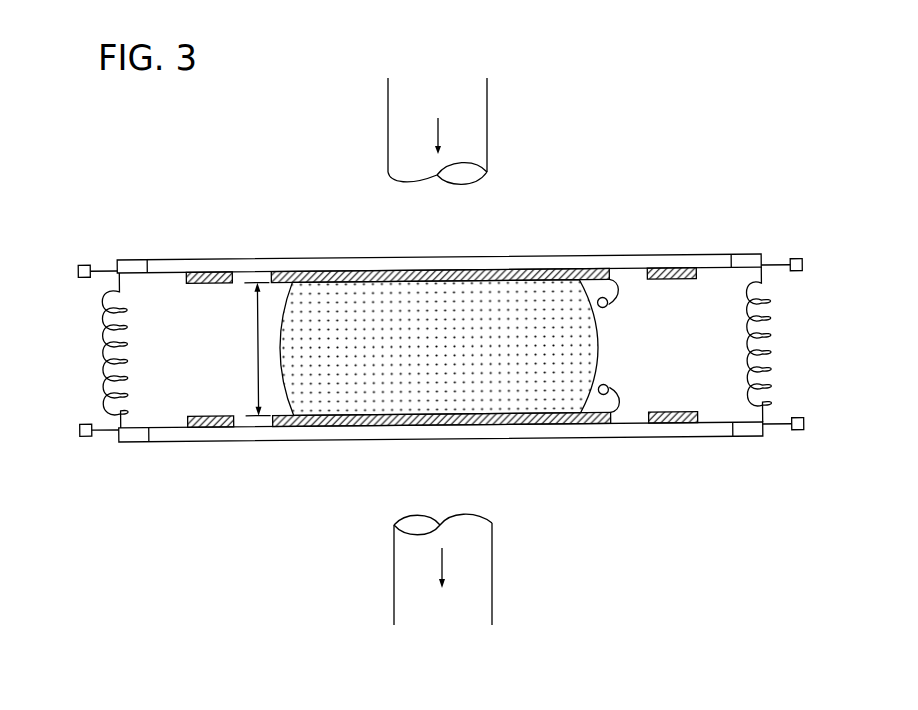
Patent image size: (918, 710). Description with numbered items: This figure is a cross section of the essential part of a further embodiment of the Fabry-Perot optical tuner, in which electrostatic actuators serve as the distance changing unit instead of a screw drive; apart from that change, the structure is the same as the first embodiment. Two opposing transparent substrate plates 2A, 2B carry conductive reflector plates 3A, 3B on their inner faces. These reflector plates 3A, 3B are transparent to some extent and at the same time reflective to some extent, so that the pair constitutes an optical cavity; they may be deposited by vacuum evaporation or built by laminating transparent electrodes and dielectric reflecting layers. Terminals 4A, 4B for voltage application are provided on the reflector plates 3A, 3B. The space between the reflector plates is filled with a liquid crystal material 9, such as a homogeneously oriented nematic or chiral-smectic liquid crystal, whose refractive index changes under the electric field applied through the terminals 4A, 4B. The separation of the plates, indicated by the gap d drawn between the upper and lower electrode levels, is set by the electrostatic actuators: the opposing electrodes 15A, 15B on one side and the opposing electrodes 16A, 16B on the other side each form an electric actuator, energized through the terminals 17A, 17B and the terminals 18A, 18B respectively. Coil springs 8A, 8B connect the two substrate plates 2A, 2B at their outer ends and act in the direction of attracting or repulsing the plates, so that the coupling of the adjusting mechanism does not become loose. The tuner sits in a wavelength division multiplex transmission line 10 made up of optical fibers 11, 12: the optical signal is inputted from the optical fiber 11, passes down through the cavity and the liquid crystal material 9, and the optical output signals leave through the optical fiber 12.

The wavelength division multiplex transmission line 10 is at (614, 137).
The optical fiber 11 is at (487, 117).
The optical fiber 12 is at (492, 571).
The transparent substrate plate 2A is at (628, 255).
The transparent substrate plate 2B is at (635, 437).
The conductive reflector plate 3A is at (442, 257).
The conductive reflector plate 3B is at (437, 439).
The terminal 4A is at (599, 298).
The terminal 4B is at (599, 394).
The coil spring 8A is at (103, 336).
The coil spring 8B is at (771, 340).
The liquid crystal material 9 is at (598, 337).
The opposing electrode 15A is at (207, 284).
The opposing electrode 15B is at (208, 416).
The opposing electrode 16A is at (674, 280).
The opposing electrode 16B is at (674, 413).
The terminal 17A is at (81, 285).
The terminal 17B is at (82, 418).
The terminal 18A is at (799, 278).
The terminal 18B is at (800, 411).
The electrode gap distance d is at (257, 349).